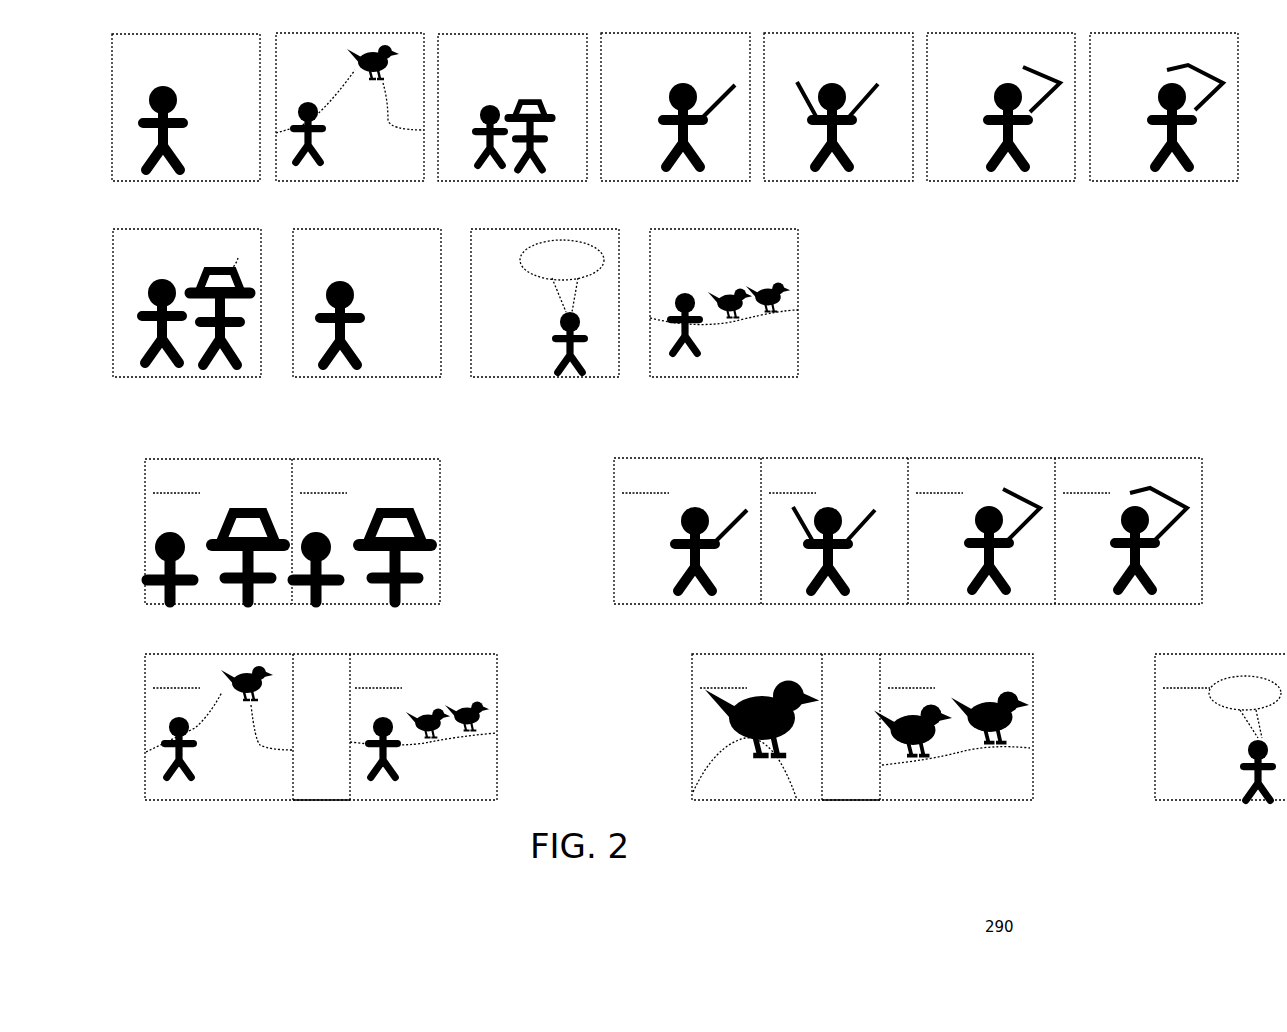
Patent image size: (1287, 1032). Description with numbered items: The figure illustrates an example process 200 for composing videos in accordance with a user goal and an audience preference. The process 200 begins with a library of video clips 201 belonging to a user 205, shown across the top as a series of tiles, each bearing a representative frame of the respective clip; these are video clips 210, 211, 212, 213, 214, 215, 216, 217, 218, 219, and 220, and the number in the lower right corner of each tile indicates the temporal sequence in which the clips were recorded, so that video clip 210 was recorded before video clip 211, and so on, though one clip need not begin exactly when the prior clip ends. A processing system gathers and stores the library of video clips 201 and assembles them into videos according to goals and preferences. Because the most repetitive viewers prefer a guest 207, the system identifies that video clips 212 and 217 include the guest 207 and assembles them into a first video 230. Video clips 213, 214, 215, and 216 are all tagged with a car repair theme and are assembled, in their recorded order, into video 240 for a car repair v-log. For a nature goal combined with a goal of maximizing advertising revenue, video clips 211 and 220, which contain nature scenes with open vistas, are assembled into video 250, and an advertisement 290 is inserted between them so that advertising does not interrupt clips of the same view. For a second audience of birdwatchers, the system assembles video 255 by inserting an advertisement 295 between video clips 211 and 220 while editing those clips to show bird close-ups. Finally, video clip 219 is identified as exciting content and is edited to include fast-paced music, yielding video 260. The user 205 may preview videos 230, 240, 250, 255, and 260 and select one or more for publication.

The process 200 is at (55, 52).
The library of video clips 201 is at (95, 396).
The user 205 is at (178, 102).
The guest 207 is at (541, 107).
The video clip 210 is at (167, 68).
The video clip 211 is at (331, 68).
The video clip 212 is at (493, 68).
The video clip 213 is at (656, 68).
The video clip 214 is at (819, 68).
The video clip 215 is at (982, 68).
The video clip 216 is at (1145, 68).
The video clip 217 is at (168, 264).
The video clip 218 is at (348, 264).
The video clip 219 is at (526, 264).
The video clip 220 is at (705, 264).
The first video 230 is at (128, 621).
The video 240 is at (602, 621).
The video 250 is at (129, 816).
The video 255 is at (673, 816).
The video 260 is at (1139, 816).
The advertisement 290 is at (318, 800).
The advertisement 295 is at (845, 800).